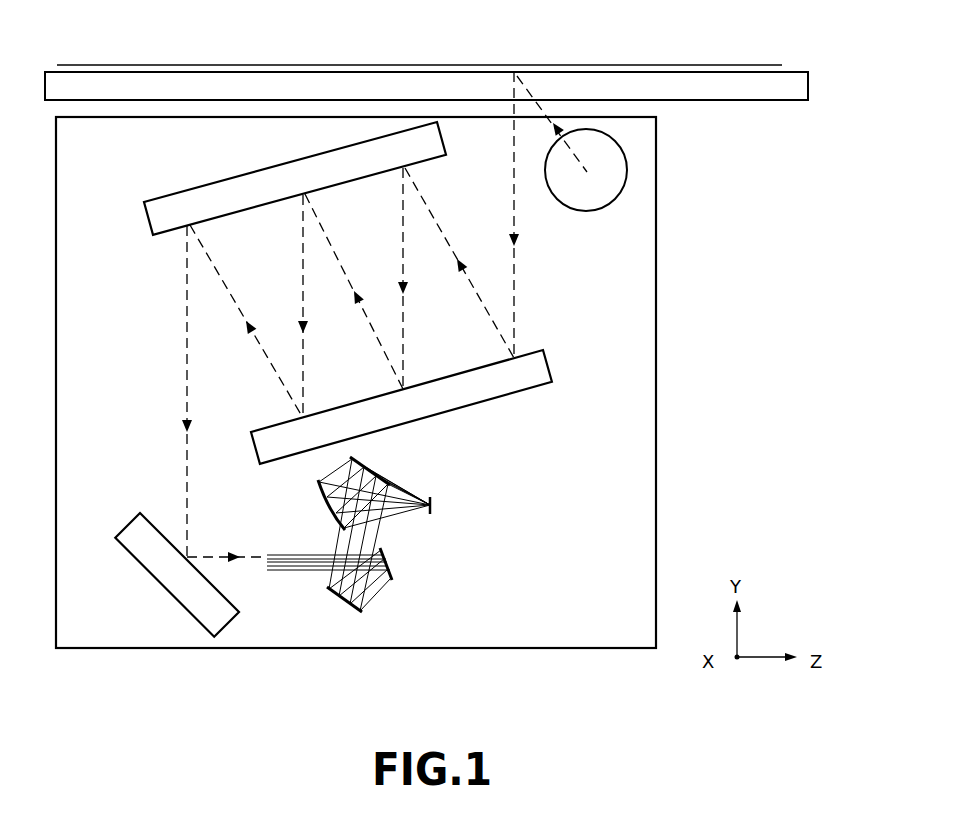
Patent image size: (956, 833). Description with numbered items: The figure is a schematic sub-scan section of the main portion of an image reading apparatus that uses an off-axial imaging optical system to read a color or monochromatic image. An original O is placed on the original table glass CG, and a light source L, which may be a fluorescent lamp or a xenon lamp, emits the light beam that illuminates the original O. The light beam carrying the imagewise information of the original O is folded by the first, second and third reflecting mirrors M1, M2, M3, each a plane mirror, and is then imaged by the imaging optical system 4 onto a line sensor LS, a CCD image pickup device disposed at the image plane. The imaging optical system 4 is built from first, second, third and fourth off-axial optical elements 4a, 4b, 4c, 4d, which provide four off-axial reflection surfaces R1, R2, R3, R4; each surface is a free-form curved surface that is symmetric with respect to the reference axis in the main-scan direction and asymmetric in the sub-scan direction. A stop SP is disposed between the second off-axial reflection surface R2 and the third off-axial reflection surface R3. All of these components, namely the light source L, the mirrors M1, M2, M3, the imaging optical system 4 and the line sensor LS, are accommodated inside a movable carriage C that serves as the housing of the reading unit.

The original O is at (473, 65).
The original table glass CG is at (718, 88).
The movable carriage C is at (657, 328).
The light source L is at (590, 198).
The first reflecting mirror M1 is at (497, 400).
The second reflecting mirror M2 is at (220, 181).
The third reflecting mirror M3 is at (158, 585).
The imaging optical system 4 is at (363, 548).
The first off-axial optical element 4a is at (433, 590).
The second off-axial optical element 4b is at (301, 615).
The third off-axial optical element 4c is at (410, 467).
The fourth off-axial optical element 4d is at (295, 502).
The first off-axial reflection surface R1 is at (393, 580).
The second off-axial reflection surface R2 is at (325, 586).
The third off-axial reflection surface R3 is at (390, 485).
The fourth off-axial reflection surface R4 is at (321, 480).
The line sensor LS is at (432, 510).
The stop SP is at (335, 556).